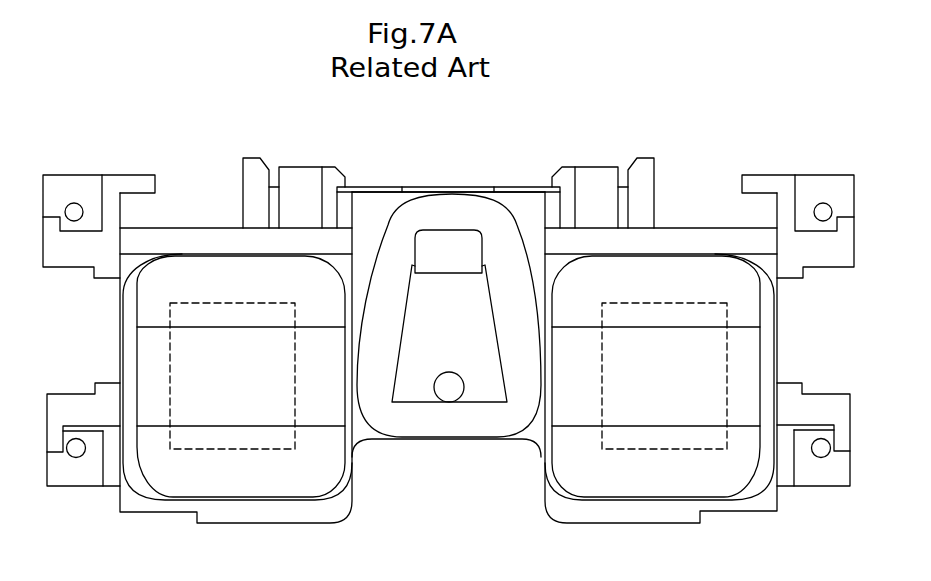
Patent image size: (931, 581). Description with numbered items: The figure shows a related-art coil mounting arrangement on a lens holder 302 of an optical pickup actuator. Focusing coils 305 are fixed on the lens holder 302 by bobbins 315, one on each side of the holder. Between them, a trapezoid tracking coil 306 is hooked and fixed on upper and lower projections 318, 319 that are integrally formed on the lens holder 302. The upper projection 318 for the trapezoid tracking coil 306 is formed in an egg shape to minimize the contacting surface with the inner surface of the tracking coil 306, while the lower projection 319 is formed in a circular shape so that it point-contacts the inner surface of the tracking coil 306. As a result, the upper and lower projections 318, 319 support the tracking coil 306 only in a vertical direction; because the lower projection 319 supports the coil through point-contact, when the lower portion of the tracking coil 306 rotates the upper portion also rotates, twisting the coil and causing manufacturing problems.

The lens holder 302 is at (298, 185).
The coil 305 is at (148, 352).
The tracking coil 306 is at (487, 217).
The bobbin 315 is at (155, 298).
The upper projection 318 is at (453, 263).
The lower projection 319 is at (447, 390).